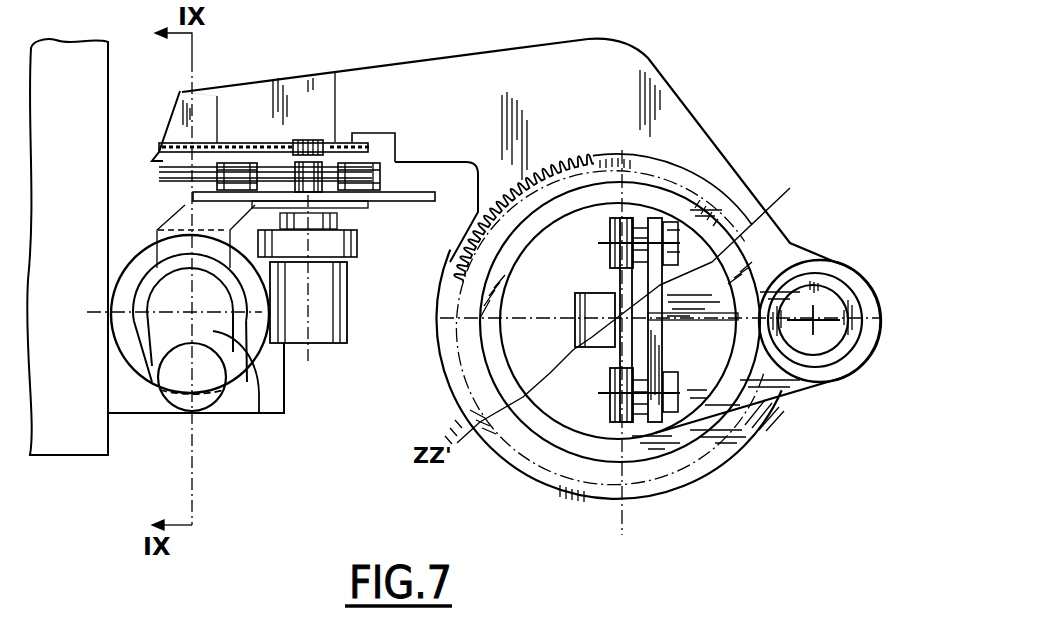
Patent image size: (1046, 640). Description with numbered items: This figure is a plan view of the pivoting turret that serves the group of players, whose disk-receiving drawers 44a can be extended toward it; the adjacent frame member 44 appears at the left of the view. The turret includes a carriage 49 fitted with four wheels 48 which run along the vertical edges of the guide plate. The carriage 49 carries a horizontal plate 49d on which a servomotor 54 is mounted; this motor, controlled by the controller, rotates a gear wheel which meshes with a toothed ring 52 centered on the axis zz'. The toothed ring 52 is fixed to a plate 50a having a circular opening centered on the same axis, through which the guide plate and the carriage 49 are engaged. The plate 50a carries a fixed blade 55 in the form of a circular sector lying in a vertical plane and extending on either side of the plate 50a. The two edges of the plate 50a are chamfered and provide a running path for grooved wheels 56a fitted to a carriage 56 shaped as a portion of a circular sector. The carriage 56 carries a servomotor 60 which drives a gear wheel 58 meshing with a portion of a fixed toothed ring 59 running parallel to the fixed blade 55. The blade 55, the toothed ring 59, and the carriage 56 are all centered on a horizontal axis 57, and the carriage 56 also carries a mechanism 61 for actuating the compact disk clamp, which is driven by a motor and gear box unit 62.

The frame plate 44 is at (82, 215).
The disk-receiving drawer 44a is at (132, 423).
The wheel 48 is at (640, 212).
The carriage 49 is at (659, 342).
The horizontal plate 49d is at (730, 378).
The plate 50a is at (733, 175).
The toothed ring 52 is at (580, 152).
The servomotor 54 is at (830, 282).
The fixed blade 55 is at (170, 182).
The carriage 56 is at (409, 208).
The grooved wheel 56a is at (217, 165).
The horizontal axis 57 is at (194, 77).
The gear wheel 58 is at (311, 134).
The fixed toothed ring 59 is at (252, 142).
The servomotor 60 is at (322, 323).
The mechanism 61 is at (258, 412).
The motor and gear box unit 62 is at (203, 418).